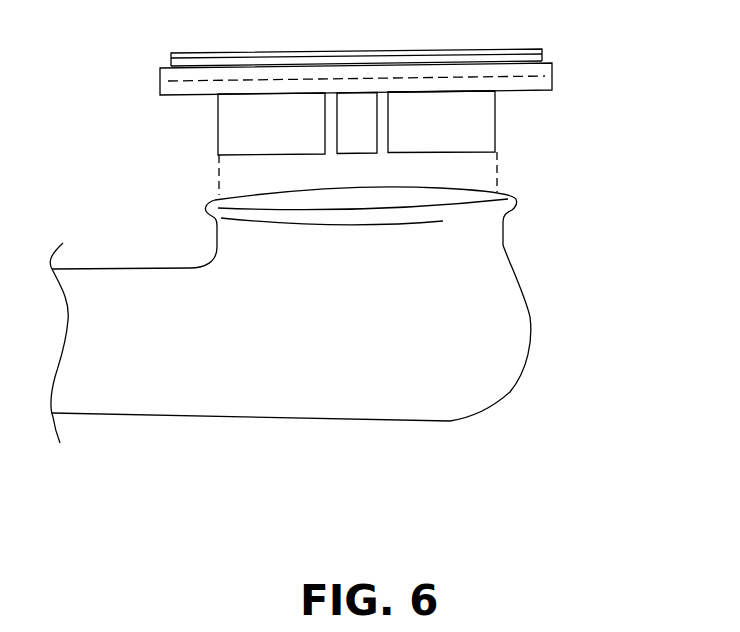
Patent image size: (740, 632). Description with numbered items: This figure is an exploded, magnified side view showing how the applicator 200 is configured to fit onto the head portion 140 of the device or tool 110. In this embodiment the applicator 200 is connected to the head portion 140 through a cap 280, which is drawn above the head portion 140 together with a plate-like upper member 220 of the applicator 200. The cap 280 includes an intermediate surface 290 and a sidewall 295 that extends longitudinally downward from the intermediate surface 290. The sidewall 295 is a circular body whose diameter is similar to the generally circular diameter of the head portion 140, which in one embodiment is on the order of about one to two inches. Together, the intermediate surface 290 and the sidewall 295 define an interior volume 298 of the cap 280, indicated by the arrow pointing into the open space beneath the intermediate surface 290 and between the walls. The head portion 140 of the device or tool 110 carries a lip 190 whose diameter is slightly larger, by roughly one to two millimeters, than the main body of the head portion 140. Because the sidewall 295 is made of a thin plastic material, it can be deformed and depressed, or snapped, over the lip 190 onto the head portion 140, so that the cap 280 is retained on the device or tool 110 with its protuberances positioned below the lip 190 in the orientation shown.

The applicator 200 is at (386, 88).
The cover plate 220 is at (553, 69).
The cap 280 is at (401, 123).
The intermediate surface 290 is at (448, 92).
The sidewall 295 is at (488, 135).
The interior volume 298 is at (447, 158).
The lip 190 is at (517, 207).
The head portion 140 is at (535, 327).
The device or tool 110 is at (185, 400).